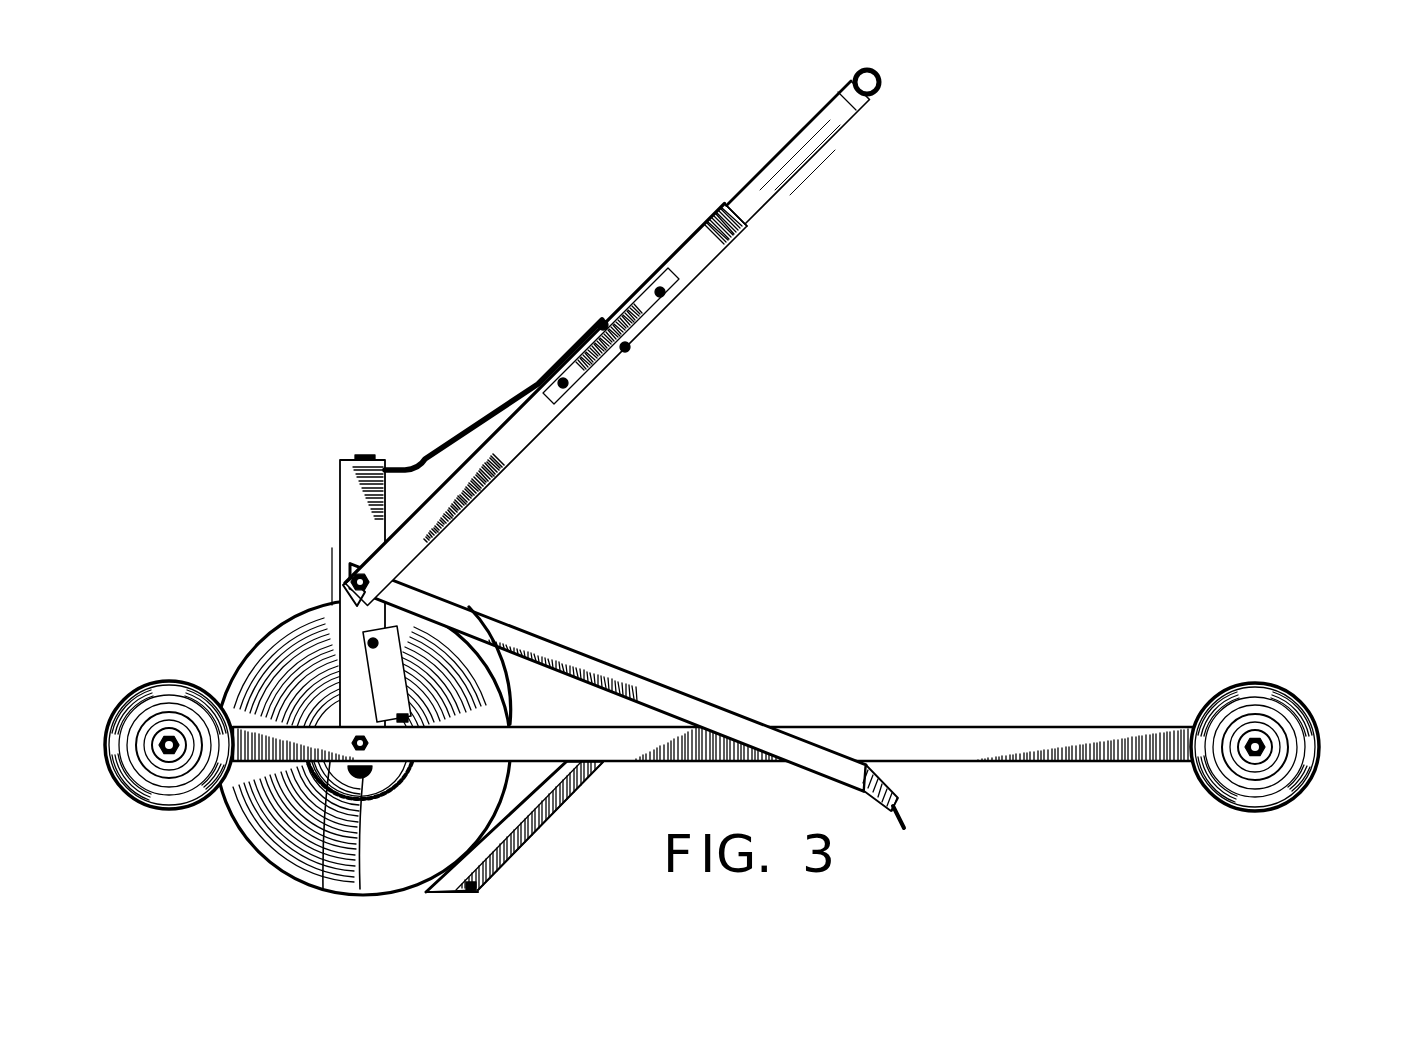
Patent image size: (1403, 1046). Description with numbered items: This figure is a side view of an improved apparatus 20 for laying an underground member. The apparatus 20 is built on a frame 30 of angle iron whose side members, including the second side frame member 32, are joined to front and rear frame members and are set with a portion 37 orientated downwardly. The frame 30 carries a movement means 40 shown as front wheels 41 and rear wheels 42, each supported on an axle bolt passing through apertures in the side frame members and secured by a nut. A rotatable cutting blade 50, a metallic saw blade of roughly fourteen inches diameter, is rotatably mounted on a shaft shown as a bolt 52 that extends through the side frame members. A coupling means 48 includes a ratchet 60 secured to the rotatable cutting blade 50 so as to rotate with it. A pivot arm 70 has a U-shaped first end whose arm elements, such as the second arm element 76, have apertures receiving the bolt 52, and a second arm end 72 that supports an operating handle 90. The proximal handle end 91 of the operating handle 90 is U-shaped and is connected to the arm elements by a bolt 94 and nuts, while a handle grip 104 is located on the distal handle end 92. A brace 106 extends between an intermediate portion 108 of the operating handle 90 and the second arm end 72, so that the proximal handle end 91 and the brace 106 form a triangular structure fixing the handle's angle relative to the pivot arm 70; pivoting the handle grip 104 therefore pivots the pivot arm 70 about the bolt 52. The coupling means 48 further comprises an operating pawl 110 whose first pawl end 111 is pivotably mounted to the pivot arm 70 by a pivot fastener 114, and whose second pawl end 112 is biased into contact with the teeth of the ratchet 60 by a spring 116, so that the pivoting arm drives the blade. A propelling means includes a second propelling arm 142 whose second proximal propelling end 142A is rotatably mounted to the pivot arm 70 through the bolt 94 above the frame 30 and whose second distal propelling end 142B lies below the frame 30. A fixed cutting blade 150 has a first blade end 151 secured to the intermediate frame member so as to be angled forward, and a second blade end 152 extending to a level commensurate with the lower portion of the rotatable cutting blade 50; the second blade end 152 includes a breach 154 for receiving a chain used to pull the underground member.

The apparatus 20 is at (783, 524).
The frame 30 is at (1052, 727).
The second side frame member 32 is at (1093, 764).
The portion 37 is at (1153, 767).
The movement means 40 is at (165, 583).
The front wheels 41 is at (112, 780).
The rear wheels 42 is at (1309, 747).
The coupling means 48 is at (268, 512).
The rotatable cutting blade 50 is at (257, 794).
The bolt 52 is at (360, 775).
The ratchet 60 is at (345, 878).
The pivot arm 70 is at (340, 500).
The second arm end 72 is at (338, 462).
The second arm element 76 is at (336, 598).
The operating handle 90 is at (655, 267).
The proximal handle end 91 is at (481, 486).
The distal handle end 92 is at (849, 123).
The bolt 94 is at (342, 565).
The handle grip 104 is at (884, 70).
The brace 106 is at (497, 405).
The intermediate portion 108 is at (612, 364).
The operating pawl 110 is at (395, 669).
The first pawl end 111 is at (398, 642).
The second pawl end 112 is at (400, 697).
The pivot fastener 114 is at (278, 645).
The spring 116 is at (495, 724).
The second propelling arm 142 is at (583, 658).
The second proximal propelling end 142A is at (390, 594).
The second distal propelling end 142B is at (900, 803).
The fixed cutting blade 150 is at (548, 820).
The first blade end 151 is at (598, 772).
The second blade end 152 is at (427, 892).
The breach 154 is at (478, 888).